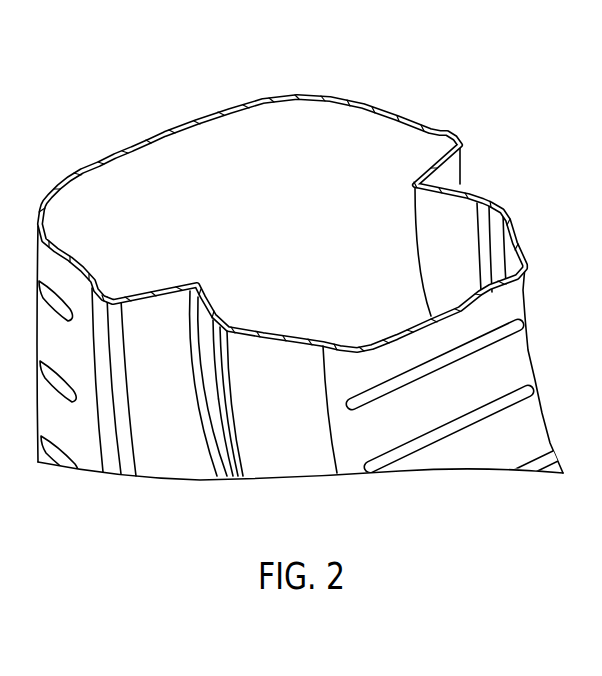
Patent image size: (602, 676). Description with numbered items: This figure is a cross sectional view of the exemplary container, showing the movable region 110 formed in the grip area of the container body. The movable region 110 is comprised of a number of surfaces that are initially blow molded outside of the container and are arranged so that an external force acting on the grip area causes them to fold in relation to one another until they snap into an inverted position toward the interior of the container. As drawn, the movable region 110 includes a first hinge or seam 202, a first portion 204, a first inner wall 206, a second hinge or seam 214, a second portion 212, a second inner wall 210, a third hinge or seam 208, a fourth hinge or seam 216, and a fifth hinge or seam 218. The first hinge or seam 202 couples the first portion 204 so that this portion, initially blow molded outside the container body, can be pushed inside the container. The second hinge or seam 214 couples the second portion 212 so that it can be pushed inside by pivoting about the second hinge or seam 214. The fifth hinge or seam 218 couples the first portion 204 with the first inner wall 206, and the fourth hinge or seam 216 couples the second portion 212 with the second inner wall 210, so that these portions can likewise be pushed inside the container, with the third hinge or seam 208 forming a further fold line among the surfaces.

The movable region 110 is at (268, 492).
The first hinge or seam 202 is at (320, 445).
The first portion 204 is at (286, 400).
The first inner wall 206 is at (231, 446).
The third hinge or seam 208 is at (215, 387).
The second inner wall 210 is at (218, 408).
The second portion 212 is at (197, 320).
The second hinge or seam 214 is at (190, 299).
The fourth hinge or seam 216 is at (200, 359).
The fifth hinge or seam 218 is at (232, 413).